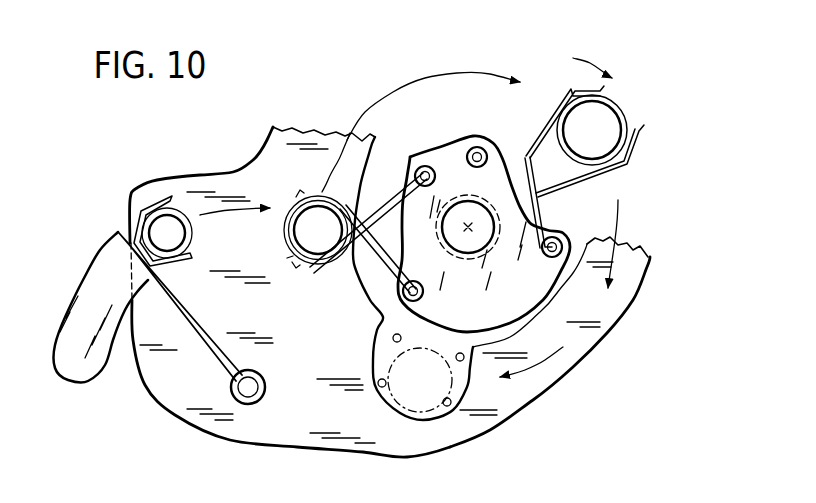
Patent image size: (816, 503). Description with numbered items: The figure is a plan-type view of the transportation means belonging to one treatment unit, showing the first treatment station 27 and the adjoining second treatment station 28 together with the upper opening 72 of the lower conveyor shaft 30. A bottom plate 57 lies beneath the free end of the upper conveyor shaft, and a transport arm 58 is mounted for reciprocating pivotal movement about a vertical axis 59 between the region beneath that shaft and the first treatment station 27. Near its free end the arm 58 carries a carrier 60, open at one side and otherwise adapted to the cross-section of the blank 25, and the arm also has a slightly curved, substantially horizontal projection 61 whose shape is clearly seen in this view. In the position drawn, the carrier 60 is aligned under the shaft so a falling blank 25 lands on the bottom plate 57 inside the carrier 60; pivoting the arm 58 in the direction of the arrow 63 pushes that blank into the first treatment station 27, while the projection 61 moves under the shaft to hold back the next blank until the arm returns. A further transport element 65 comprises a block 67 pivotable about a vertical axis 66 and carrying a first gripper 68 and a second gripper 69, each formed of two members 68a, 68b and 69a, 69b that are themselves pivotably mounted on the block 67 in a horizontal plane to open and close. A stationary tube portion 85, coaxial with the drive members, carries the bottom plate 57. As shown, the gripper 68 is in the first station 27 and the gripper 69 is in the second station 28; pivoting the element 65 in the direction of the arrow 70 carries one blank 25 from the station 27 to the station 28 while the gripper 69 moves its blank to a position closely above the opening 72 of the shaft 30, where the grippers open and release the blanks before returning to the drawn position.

The blank 25 is at (288, 230).
The first treatment station 27 is at (286, 188).
The second treatment station 28 is at (622, 100).
The lower conveyor shaft 30 is at (440, 410).
The bottom plate 57 is at (328, 417).
The transport arm 58 is at (210, 343).
The vertical axis 59 is at (247, 393).
The carrier 60 is at (153, 200).
The projection 61 is at (78, 367).
The arrow 63 is at (230, 210).
The transport element 65 is at (570, 292).
The vertical axis 66 is at (467, 225).
The block 67 is at (537, 278).
The first gripper 68 is at (300, 275).
The first gripper member 68a is at (377, 172).
The first gripper member 68b is at (358, 265).
The second gripper 69 is at (572, 90).
The second gripper member 69a is at (557, 107).
The second gripper member 69b is at (627, 160).
The arrow 70 is at (397, 92).
The upper opening 72 is at (412, 400).
The stationary tube portion 85 is at (490, 255).